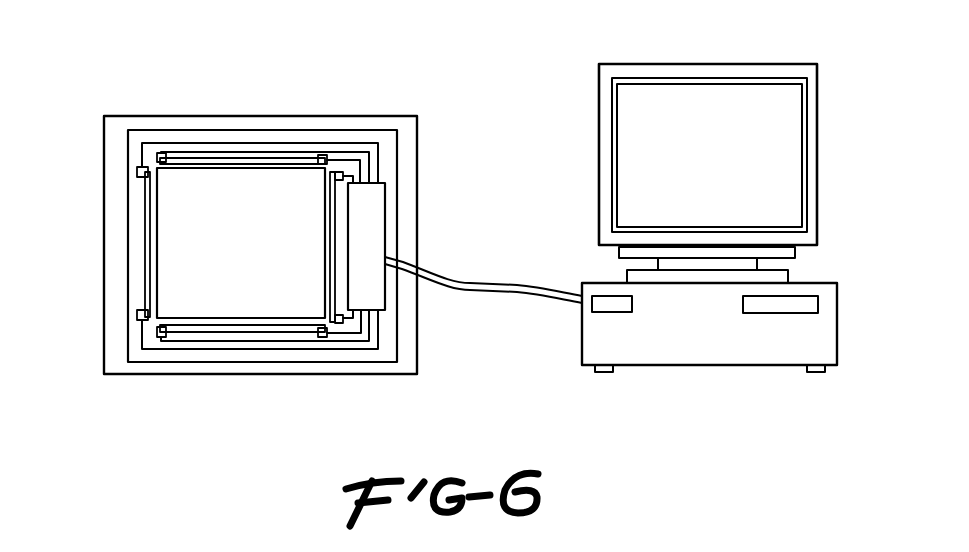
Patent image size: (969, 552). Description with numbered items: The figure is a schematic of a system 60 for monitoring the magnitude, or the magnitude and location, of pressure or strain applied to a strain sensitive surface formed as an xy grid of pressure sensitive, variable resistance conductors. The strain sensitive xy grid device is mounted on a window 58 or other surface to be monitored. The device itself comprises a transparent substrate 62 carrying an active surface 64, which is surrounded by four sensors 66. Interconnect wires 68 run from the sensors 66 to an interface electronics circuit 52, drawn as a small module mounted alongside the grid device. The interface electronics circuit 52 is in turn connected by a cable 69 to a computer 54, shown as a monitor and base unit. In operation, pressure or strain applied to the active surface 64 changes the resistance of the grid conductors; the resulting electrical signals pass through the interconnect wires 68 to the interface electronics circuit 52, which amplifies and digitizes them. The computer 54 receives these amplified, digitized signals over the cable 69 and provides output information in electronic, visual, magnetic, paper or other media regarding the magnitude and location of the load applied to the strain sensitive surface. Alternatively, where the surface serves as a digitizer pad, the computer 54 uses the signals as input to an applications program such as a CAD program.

The interface electronics circuit 52 is at (380, 218).
The computer 54 is at (709, 360).
The window 58 is at (112, 165).
The system 60 is at (286, 102).
The transparent substrate 62 is at (137, 205).
The active surface 64 is at (195, 182).
The sensors 66 is at (134, 277).
The interconnect wires 68 is at (318, 343).
The cable 69 is at (513, 284).